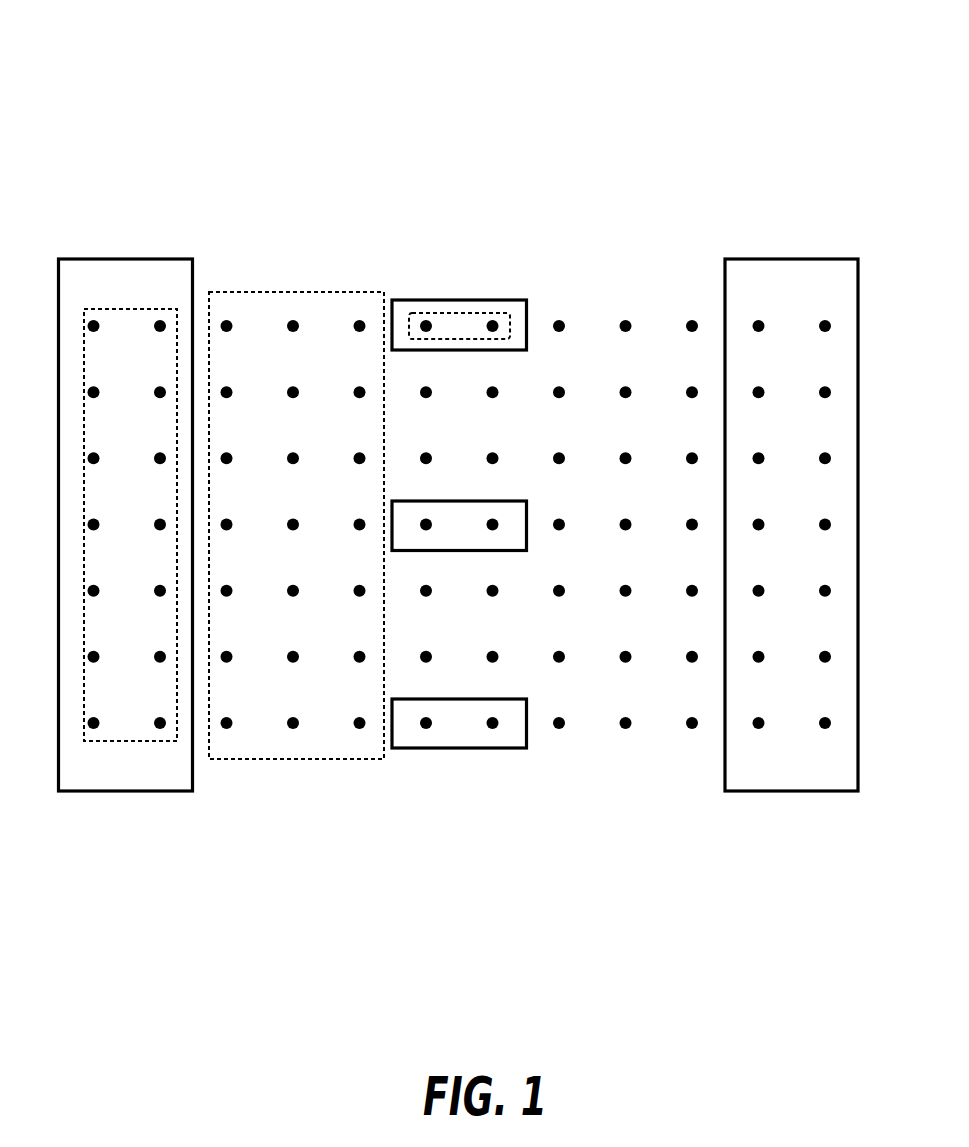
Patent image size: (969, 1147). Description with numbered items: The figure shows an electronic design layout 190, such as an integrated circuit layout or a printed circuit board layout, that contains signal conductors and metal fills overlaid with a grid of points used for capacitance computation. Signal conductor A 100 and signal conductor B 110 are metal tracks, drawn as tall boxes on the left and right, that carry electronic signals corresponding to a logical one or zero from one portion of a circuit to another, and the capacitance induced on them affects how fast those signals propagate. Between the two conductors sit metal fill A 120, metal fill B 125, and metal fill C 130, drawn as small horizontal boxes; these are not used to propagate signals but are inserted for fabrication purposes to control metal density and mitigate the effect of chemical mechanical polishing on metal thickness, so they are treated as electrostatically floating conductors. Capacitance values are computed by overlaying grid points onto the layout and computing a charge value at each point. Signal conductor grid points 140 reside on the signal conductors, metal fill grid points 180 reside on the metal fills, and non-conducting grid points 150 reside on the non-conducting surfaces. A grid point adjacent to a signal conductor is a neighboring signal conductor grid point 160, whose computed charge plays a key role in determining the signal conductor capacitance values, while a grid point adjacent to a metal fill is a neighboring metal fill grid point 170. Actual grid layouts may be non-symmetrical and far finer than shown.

The signal conductor A 100 is at (158, 259).
The signal conductor B 110 is at (750, 259).
The metal fill A 120 is at (493, 300).
The metal fill B 125 is at (511, 501).
The metal fill C 130 is at (512, 699).
The signal conductor grid points 140 is at (125, 741).
The non-conducting grid points 150 is at (306, 758).
The neighboring signal conductor grid point 160 is at (226, 323).
The neighboring metal fill grid point 170 is at (358, 321).
The metal fill grid points 180 is at (451, 313).
The layout 190 is at (319, 62).